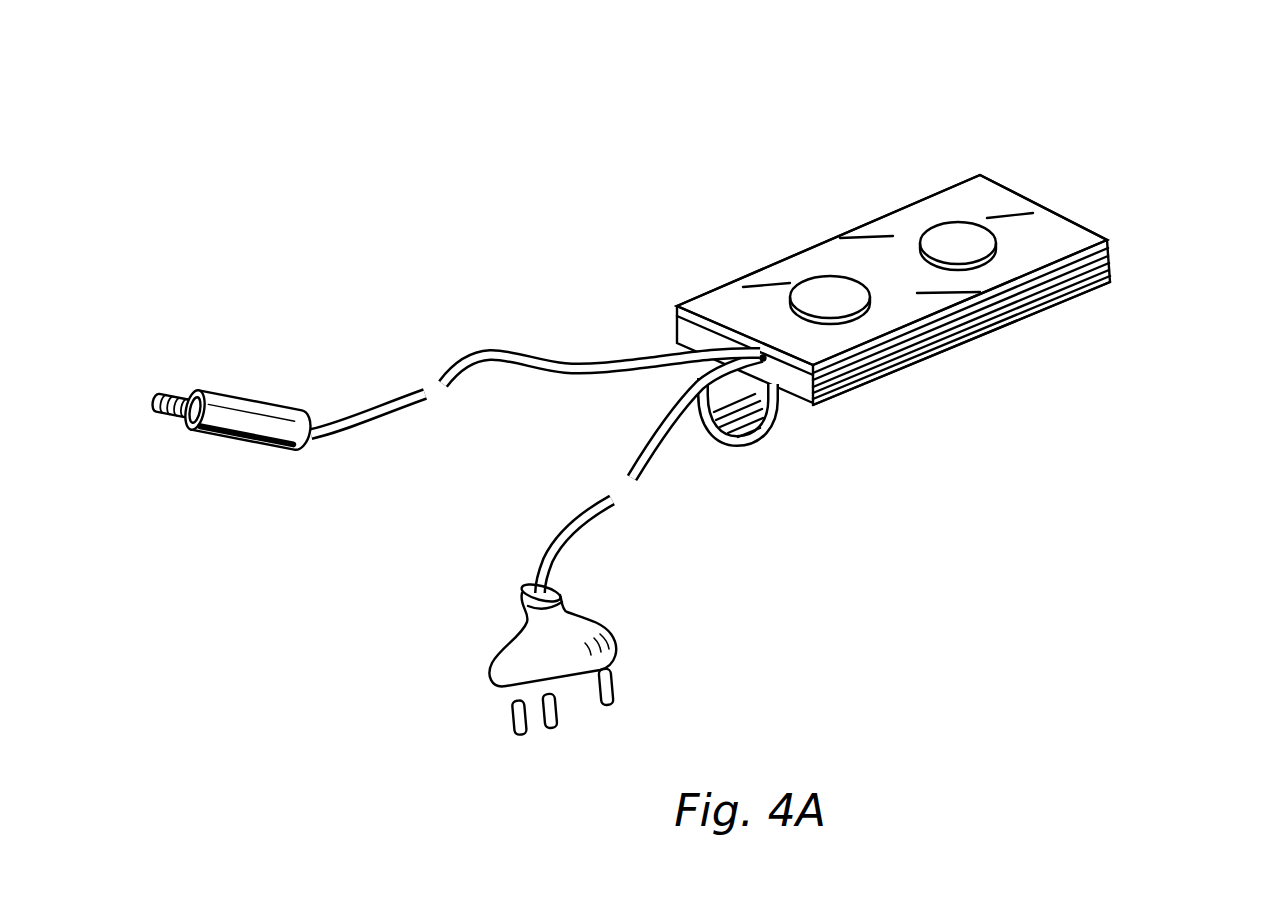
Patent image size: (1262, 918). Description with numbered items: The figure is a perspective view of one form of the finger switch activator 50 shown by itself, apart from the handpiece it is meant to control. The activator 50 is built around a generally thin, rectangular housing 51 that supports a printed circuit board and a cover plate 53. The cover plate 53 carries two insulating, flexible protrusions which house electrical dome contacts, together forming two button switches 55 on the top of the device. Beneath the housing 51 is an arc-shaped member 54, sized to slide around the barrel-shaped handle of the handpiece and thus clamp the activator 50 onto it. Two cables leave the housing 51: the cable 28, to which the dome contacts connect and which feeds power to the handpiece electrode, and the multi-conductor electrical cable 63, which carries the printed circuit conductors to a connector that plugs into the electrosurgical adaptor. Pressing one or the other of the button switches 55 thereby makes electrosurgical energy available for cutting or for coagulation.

The cable 28 is at (493, 352).
The finger switch activator 50 is at (1019, 130).
The housing 51 is at (1111, 262).
The cover plate 53 is at (1017, 213).
The arc-shaped member 54 is at (798, 427).
The button switches 55 is at (958, 246).
The multi-conductor electrical cable 63 is at (635, 472).